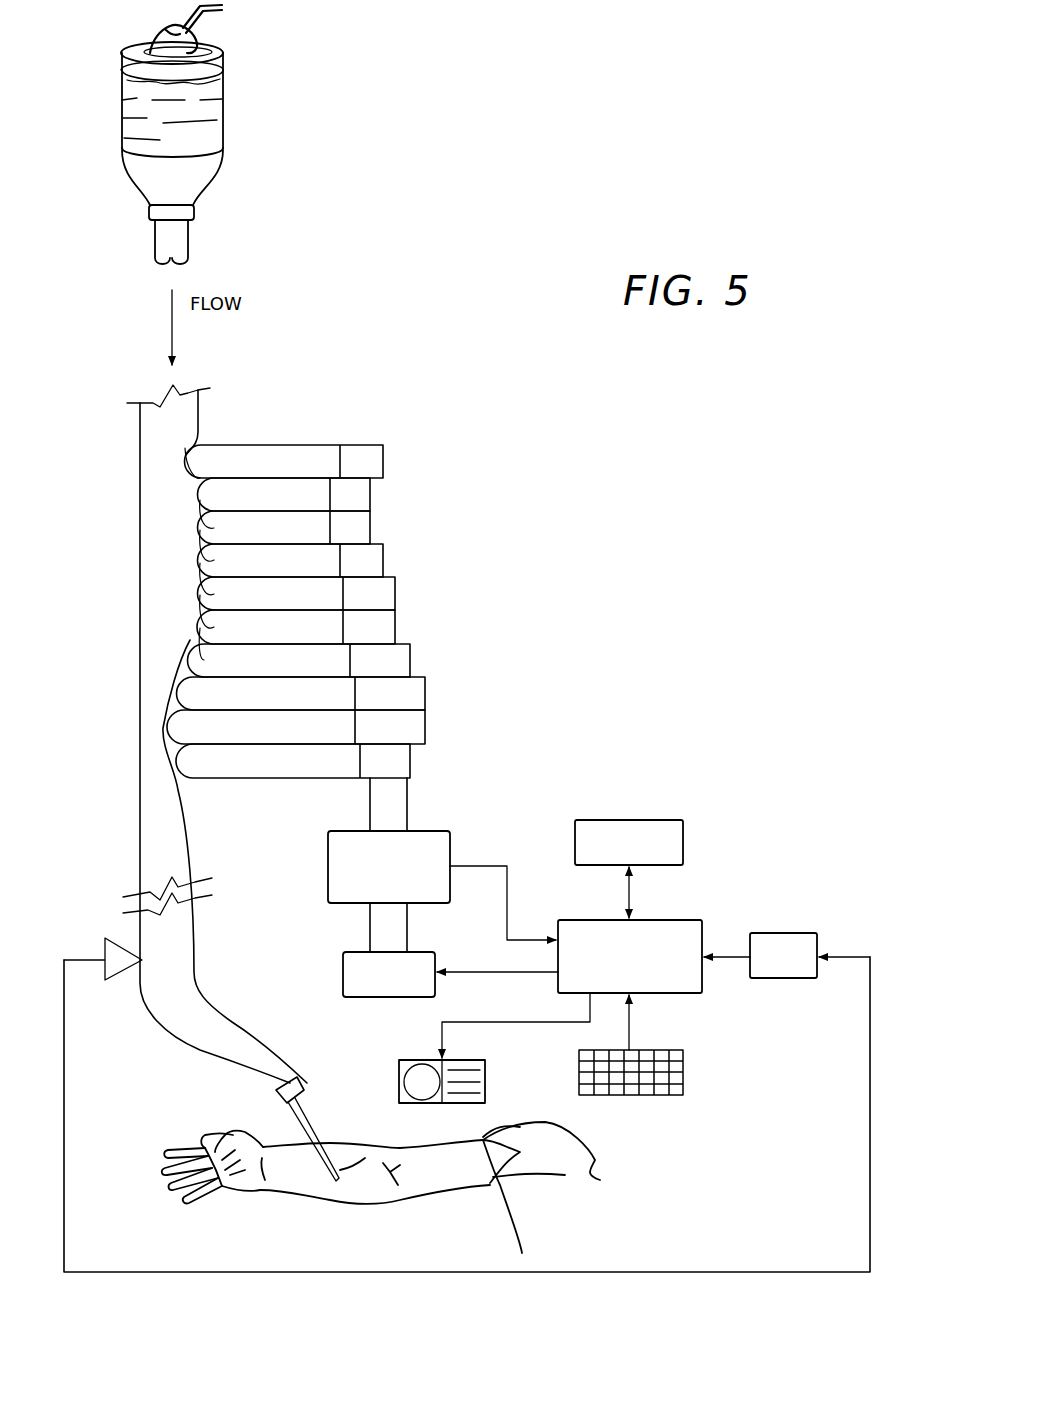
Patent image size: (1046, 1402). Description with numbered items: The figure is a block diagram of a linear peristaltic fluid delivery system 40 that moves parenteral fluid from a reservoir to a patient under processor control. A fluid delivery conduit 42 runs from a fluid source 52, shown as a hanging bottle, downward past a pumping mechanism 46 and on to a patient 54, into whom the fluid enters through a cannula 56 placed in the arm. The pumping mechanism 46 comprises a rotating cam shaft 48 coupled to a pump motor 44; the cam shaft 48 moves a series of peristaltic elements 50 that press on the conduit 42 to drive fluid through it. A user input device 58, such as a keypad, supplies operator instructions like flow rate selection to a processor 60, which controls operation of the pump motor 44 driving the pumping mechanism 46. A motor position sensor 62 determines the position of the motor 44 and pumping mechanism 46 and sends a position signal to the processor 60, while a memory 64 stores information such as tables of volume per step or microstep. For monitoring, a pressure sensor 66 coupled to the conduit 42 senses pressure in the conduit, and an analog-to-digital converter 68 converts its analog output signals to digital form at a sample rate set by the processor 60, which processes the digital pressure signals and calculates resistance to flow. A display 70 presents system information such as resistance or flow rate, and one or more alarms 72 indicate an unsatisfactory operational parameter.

The fluid delivery system 40 is at (609, 646).
The fluid delivery conduit 42 is at (158, 817).
The pump motor 44 is at (343, 973).
The pumping mechanism 46 is at (222, 790).
The rotating cam shaft 48 is at (407, 813).
The peristaltic elements 50 is at (395, 621).
The fluid source 52 is at (223, 128).
The patient 54 is at (440, 1177).
The cannula 56 is at (347, 1173).
The user input device 58 is at (683, 1068).
The processor 60 is at (702, 932).
The motor position sensor 62 is at (450, 848).
The memory 64 is at (642, 820).
The pressure sensor 66 is at (122, 978).
The analog-to-digital converter 68 is at (798, 933).
The display 70 is at (399, 1073).
The alarms 72 is at (487, 1085).